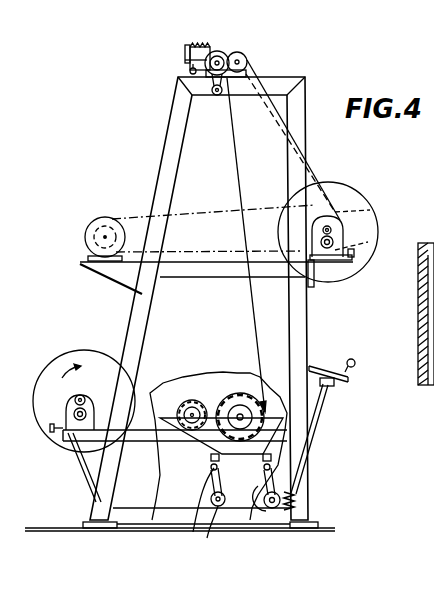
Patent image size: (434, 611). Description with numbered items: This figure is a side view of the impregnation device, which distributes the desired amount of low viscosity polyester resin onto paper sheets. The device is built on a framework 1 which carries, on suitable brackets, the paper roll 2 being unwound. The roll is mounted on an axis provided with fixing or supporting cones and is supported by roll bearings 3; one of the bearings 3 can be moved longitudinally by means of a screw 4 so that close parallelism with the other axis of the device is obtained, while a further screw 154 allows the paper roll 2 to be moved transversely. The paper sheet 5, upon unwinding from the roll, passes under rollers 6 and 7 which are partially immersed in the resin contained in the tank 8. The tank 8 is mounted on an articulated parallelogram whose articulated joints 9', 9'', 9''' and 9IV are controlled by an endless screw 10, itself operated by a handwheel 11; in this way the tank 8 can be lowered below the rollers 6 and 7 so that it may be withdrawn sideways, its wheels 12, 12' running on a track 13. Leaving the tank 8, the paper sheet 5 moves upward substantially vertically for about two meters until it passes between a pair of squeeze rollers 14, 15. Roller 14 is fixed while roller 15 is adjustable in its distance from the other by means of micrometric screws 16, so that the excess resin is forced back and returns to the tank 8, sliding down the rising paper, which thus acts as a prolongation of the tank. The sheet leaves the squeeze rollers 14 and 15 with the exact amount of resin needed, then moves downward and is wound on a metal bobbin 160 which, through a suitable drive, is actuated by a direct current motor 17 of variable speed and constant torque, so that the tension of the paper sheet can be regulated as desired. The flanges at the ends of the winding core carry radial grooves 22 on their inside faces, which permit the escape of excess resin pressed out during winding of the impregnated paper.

The framework 1 is at (170, 146).
The paper roll 2 is at (97, 352).
The roll bearings 3 is at (70, 411).
The screw 4 is at (52, 430).
The paper sheet 5 is at (254, 305).
The roller 6 is at (201, 400).
The roller 7 is at (239, 394).
The tank 8 is at (198, 452).
The articulated joint 9' is at (193, 511).
The articulated joint 9'' is at (207, 530).
The articulated joint 9''' is at (312, 478).
The articulated joint 9IV is at (276, 490).
The endless screw 10 is at (295, 505).
The handwheel 11 is at (330, 365).
The wheel 12 is at (197, 469).
The wheel 12' is at (308, 449).
The track 13 is at (215, 470).
The squeeze roller 14 is at (246, 57).
The squeeze roller 15 is at (220, 52).
The micrometric screws 16 is at (183, 66).
The direct current motor 17 is at (95, 222).
The radial grooves 22 is at (355, 190).
The screw 154 is at (88, 404).
The metal bobbin 160 is at (373, 224).